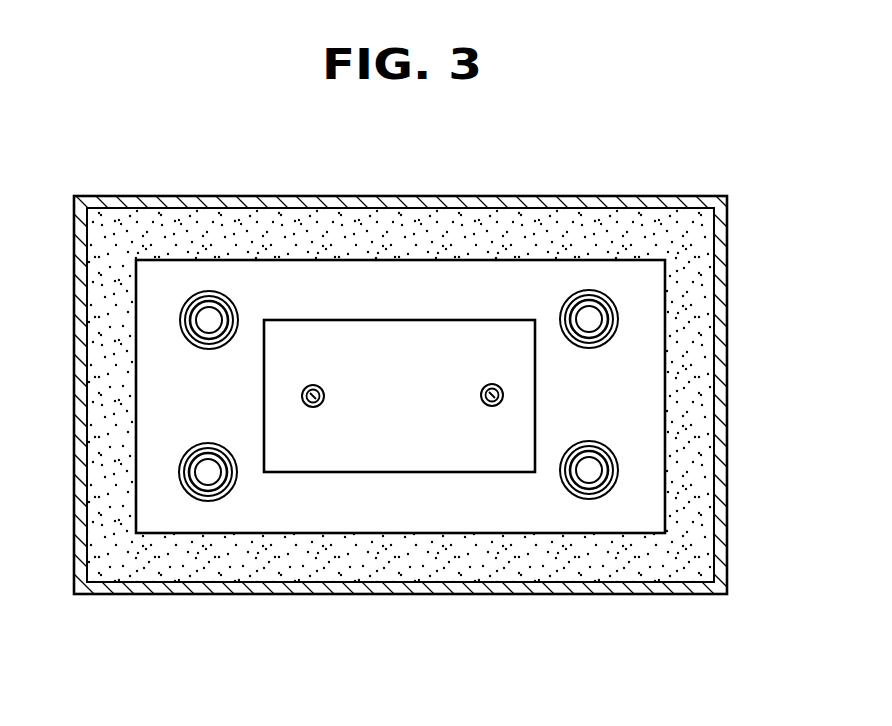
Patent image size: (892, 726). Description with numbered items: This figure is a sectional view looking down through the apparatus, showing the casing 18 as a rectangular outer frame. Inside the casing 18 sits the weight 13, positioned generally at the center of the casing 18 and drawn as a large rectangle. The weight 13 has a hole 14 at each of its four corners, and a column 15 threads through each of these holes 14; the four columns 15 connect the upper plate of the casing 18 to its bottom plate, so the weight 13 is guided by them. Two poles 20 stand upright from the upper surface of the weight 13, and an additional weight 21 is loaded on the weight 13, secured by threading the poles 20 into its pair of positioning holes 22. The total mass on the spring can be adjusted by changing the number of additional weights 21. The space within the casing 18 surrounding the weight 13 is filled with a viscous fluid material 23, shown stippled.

The weight 13 is at (228, 259).
The hole 14 is at (187, 339).
The column 15 is at (212, 325).
The casing 18 is at (625, 197).
The pole 20 is at (321, 389).
The additional weight 21 is at (368, 319).
The positioning hole 22 is at (315, 408).
The viscous fluid material 23 is at (683, 483).